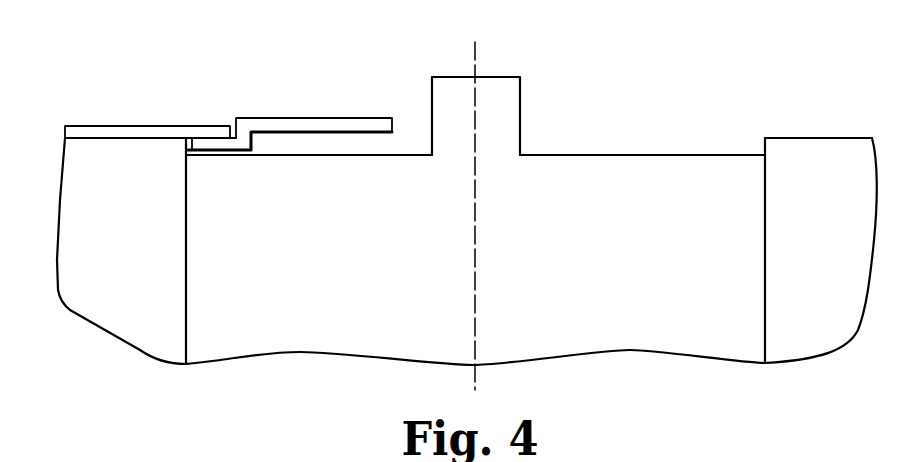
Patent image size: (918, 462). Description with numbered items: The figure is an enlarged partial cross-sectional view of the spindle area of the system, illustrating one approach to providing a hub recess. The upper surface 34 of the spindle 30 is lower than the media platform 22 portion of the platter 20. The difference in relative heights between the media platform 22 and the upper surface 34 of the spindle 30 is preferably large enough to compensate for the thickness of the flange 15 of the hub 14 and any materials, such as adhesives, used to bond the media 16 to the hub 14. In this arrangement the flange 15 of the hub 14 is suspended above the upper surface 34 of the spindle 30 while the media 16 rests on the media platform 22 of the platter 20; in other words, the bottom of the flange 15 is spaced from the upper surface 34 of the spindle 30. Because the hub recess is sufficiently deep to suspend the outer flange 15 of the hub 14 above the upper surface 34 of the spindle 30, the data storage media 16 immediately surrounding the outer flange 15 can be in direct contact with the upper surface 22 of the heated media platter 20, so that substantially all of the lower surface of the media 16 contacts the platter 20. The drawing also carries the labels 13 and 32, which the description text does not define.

The upper conductive plate layer 13 is at (270, 118).
The hub 14 is at (333, 118).
The flange 15 is at (215, 145).
The media 16 is at (97, 126).
The platter 20 is at (101, 256).
The media platform 22 is at (121, 138).
The spindle 30 is at (592, 271).
The gate structure 32 is at (503, 77).
The upper surface 34 is at (410, 154).